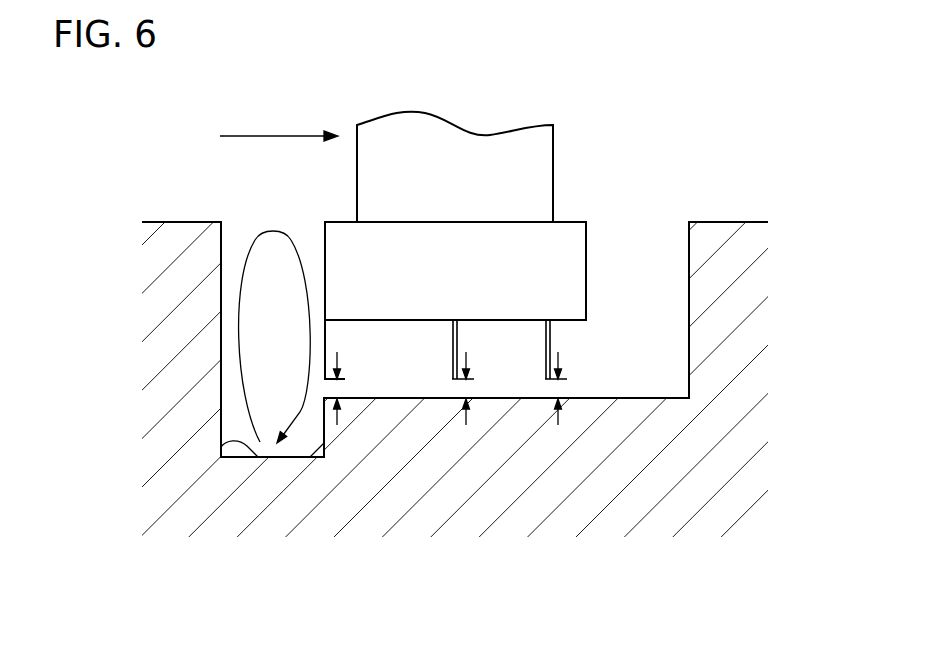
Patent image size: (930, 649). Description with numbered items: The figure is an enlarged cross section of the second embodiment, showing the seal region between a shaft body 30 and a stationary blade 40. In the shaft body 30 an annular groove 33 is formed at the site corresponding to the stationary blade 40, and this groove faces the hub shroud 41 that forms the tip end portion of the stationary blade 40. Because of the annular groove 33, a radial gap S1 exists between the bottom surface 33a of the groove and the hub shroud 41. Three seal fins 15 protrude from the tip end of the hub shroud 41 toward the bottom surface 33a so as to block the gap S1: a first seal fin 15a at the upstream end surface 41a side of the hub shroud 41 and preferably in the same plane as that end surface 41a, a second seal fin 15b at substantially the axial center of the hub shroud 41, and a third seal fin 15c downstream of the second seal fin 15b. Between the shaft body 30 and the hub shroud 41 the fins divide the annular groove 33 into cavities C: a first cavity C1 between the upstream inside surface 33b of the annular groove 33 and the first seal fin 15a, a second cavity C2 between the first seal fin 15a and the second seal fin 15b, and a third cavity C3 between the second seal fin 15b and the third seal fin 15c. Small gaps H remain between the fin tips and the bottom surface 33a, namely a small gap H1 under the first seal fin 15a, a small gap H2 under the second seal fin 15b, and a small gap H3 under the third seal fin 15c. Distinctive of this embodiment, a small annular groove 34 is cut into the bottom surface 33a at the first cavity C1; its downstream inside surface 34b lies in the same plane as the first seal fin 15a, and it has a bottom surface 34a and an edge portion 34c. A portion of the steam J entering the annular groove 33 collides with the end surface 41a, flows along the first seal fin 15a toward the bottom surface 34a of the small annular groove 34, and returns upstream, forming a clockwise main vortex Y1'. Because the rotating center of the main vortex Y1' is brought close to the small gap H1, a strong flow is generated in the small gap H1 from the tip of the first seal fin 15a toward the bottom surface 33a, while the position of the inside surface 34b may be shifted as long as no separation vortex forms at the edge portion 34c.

The shaft body 30 is at (747, 222).
The annular groove 33 is at (689, 276).
The bottom surface 33a is at (647, 398).
The inside surface 33b is at (221, 248).
The small annular groove 34 is at (224, 501).
The bottom surface of small annular groove 34a is at (217, 455).
The inside surface of small annular groove 34b is at (317, 398).
The edge portion 34c is at (298, 428).
The stationary blade 40 is at (553, 162).
The hub shroud 41 is at (378, 222).
The end surface 41a is at (324, 248).
The seal fins 15 is at (470, 478).
The first seal fin 15a is at (325, 333).
The second seal fin 15b is at (452, 367).
The third seal fin 15c is at (545, 367).
The small gaps H is at (471, 492).
The small gap H1 is at (338, 402).
The small gap H2 is at (467, 385).
The small gap H3 is at (556, 388).
The cavities C is at (299, 319).
The first cavity C1 is at (235, 272).
The second cavity C2 is at (392, 352).
The third cavity C3 is at (500, 352).
The main vortex Y1' is at (197, 337).
The gap S1 is at (567, 348).
The steam J is at (272, 135).